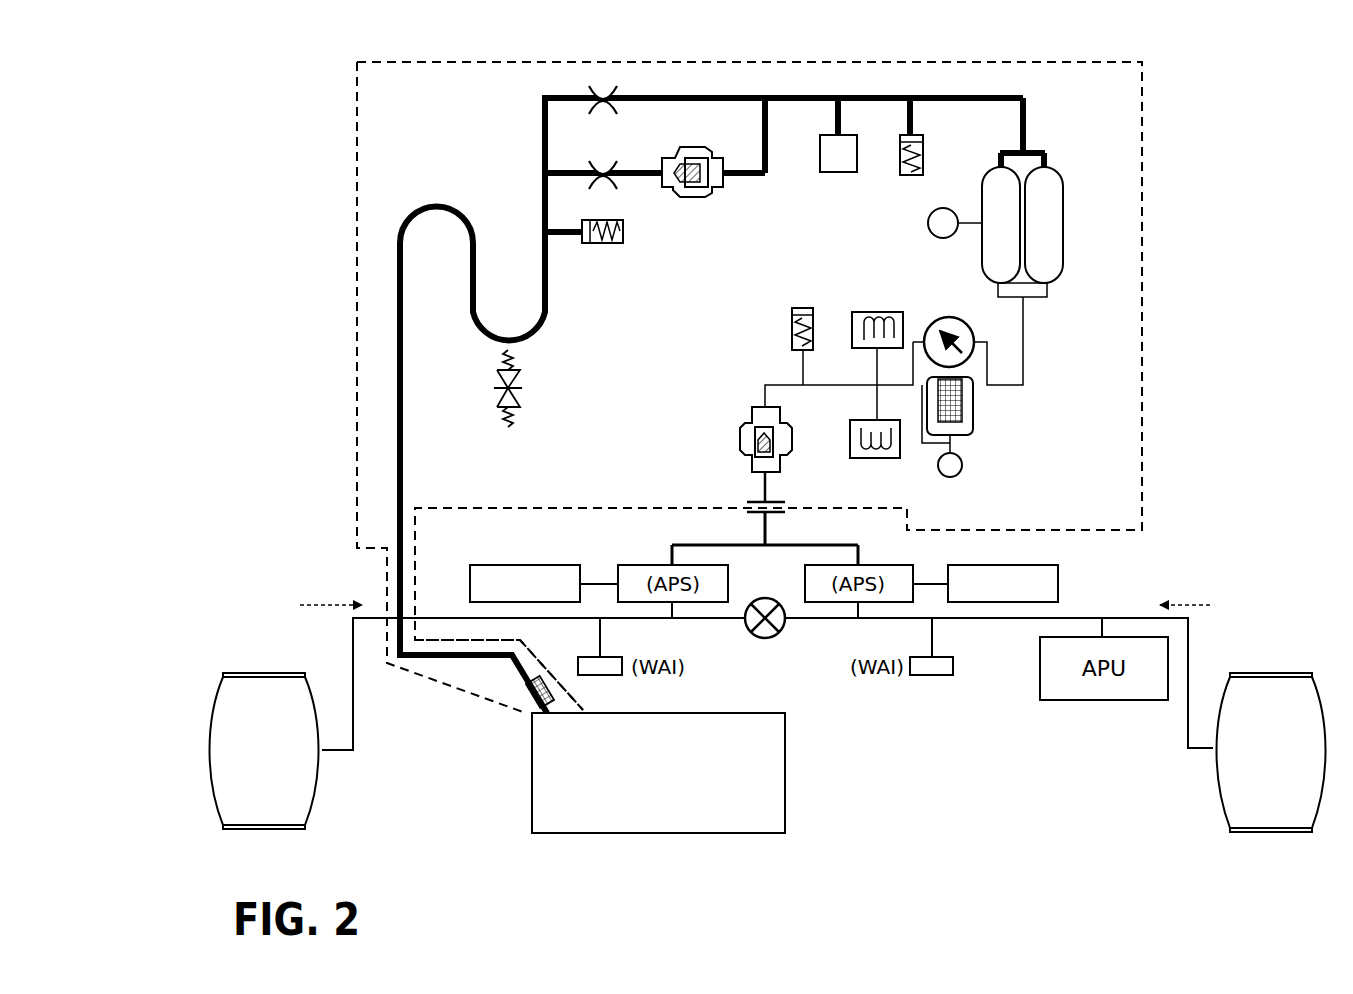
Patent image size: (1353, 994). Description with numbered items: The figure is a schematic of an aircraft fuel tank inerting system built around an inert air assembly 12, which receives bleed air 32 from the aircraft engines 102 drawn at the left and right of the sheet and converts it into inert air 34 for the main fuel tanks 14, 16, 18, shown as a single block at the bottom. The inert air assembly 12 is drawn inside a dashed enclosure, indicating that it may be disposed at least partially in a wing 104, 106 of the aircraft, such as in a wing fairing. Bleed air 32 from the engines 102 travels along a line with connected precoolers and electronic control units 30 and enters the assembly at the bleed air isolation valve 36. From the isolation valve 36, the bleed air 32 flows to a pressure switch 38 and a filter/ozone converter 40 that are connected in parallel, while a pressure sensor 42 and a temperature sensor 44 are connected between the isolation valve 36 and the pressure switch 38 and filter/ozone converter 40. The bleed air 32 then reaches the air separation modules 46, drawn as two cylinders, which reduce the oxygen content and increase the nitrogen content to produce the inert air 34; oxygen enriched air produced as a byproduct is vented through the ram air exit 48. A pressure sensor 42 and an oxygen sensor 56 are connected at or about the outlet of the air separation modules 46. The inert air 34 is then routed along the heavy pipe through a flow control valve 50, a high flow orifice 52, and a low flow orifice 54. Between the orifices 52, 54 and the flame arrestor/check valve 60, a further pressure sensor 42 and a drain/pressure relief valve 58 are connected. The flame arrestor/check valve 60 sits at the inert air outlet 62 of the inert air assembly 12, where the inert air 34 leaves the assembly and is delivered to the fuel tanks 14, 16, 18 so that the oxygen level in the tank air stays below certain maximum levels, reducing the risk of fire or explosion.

The inert air assembly 12 is at (1234, 120).
The left wing tank 14 is at (658, 773).
The right wing tank 16 is at (658, 773).
The center tank 18 is at (690, 798).
The electronic control unit 30 is at (536, 596).
The bleed air 32 is at (320, 605).
The inert air 34 is at (417, 413).
The bleed air isolation valve 36 is at (752, 424).
The pressure switch 38 is at (975, 330).
The filter/ozone converter 40 is at (973, 410).
The pressure sensor 42 is at (590, 243).
The temperature sensor 44 is at (850, 443).
The air separation module 46 is at (1063, 218).
The ram air exit 48 is at (935, 236).
The flow control valve 50 is at (698, 198).
The high flow orifice 52 is at (601, 165).
The low flow orifice 54 is at (603, 90).
The oxygen sensor 56 is at (838, 172).
The drain/pressure relief valve 58 is at (522, 392).
The flame arrestor/check valve 60 is at (528, 688).
The inert air outlet 62 is at (592, 698).
The aircraft engine 102 is at (246, 763).
The wing 104 is at (716, 363).
The wing 106 is at (749, 387).